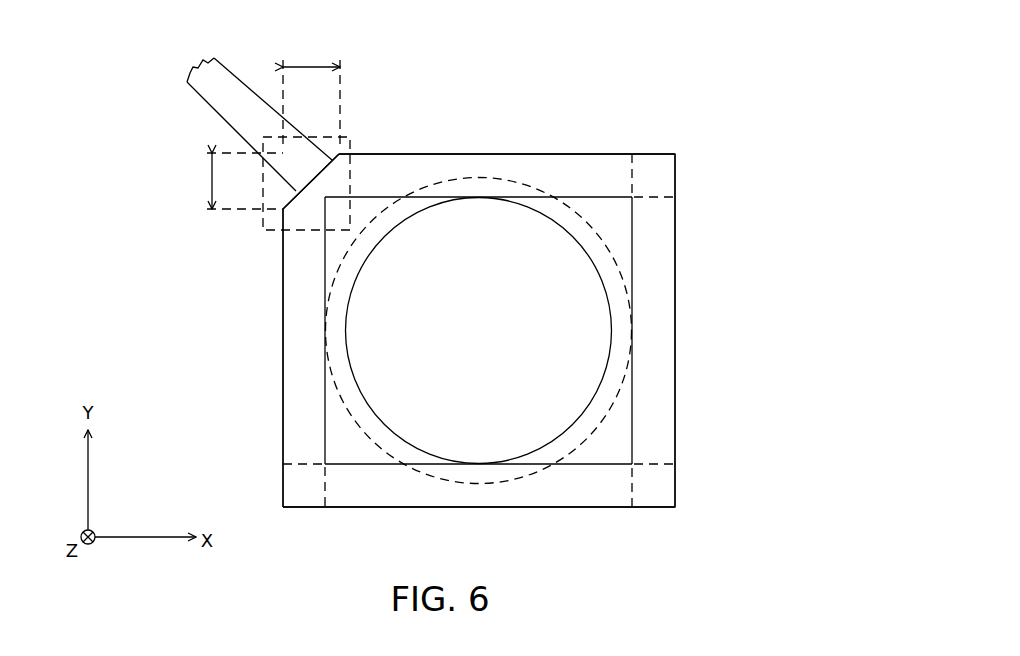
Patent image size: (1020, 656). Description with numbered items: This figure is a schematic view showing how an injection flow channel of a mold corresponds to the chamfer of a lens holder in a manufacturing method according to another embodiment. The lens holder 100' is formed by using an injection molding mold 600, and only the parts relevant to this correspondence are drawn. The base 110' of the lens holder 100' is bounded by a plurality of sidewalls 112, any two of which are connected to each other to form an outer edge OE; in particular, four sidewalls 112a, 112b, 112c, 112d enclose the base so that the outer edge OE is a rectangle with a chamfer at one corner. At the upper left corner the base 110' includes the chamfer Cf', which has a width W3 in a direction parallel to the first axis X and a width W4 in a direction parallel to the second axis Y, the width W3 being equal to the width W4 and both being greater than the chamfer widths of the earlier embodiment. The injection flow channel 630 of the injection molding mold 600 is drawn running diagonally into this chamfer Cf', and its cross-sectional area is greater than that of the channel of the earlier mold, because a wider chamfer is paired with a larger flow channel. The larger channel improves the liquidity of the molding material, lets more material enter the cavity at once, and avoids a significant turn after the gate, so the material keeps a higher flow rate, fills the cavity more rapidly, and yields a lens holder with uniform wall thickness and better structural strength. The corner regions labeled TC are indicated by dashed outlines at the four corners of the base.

The lens holder 100' is at (478, 322).
The base 110' is at (478, 322).
The sidewalls 112 is at (479, 330).
The sidewall 112a is at (567, 490).
The sidewall 112b is at (283, 350).
The sidewall 112c is at (552, 170).
The sidewall 112d is at (658, 333).
The outer edge OE is at (414, 152).
The corner region TC is at (350, 177).
The chamfer Cf' is at (311, 145).
The width W3 is at (228, 181).
The width W4 is at (311, 92).
The injection flow channel 630 is at (218, 83).
The injection molding mold 600 is at (259, 95).